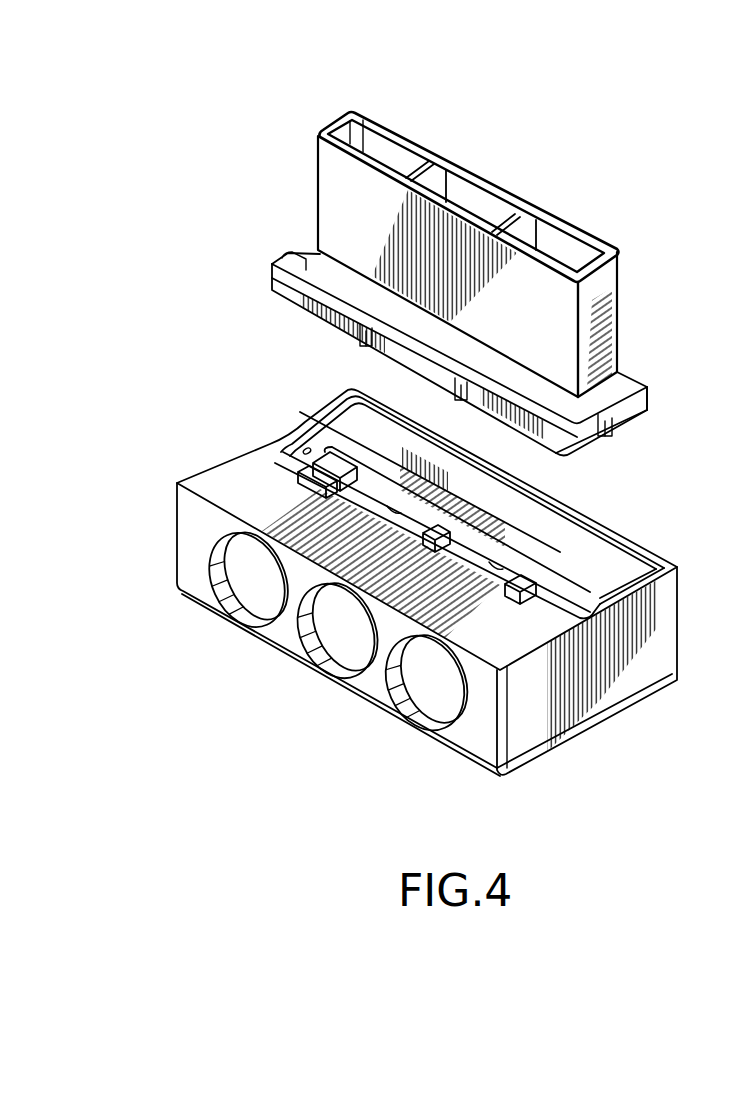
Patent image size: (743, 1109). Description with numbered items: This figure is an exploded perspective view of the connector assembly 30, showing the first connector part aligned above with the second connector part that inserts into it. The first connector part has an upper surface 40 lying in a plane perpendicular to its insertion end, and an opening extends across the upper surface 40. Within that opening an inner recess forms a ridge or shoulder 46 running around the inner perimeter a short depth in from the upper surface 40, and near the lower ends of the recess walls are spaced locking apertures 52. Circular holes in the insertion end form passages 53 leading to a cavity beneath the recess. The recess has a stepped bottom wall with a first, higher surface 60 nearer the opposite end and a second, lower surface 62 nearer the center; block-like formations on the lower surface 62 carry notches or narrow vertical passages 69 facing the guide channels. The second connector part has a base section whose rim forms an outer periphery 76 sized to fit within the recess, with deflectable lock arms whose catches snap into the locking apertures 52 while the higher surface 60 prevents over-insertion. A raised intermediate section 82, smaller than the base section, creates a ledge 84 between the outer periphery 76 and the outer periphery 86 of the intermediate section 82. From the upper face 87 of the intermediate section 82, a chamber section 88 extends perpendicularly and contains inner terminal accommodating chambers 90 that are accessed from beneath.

The connector assembly 30 is at (214, 165).
The upper surface 40 is at (270, 504).
The ridge or shoulder 46 is at (297, 437).
The locking apertures 52 is at (305, 452).
The passages 53 is at (347, 637).
The first, higher surface 60 is at (605, 585).
The second, lower surface 62 is at (547, 605).
The notches or narrow vertical passages 69 is at (430, 532).
The outer periphery 76 is at (293, 292).
The raised intermediate section 82 is at (575, 415).
The ledge 84 is at (300, 266).
The outer periphery 86 is at (607, 398).
The upper face 87 is at (417, 325).
The chamber section 88 is at (618, 287).
The inner terminal accommodating chambers 90 is at (553, 243).